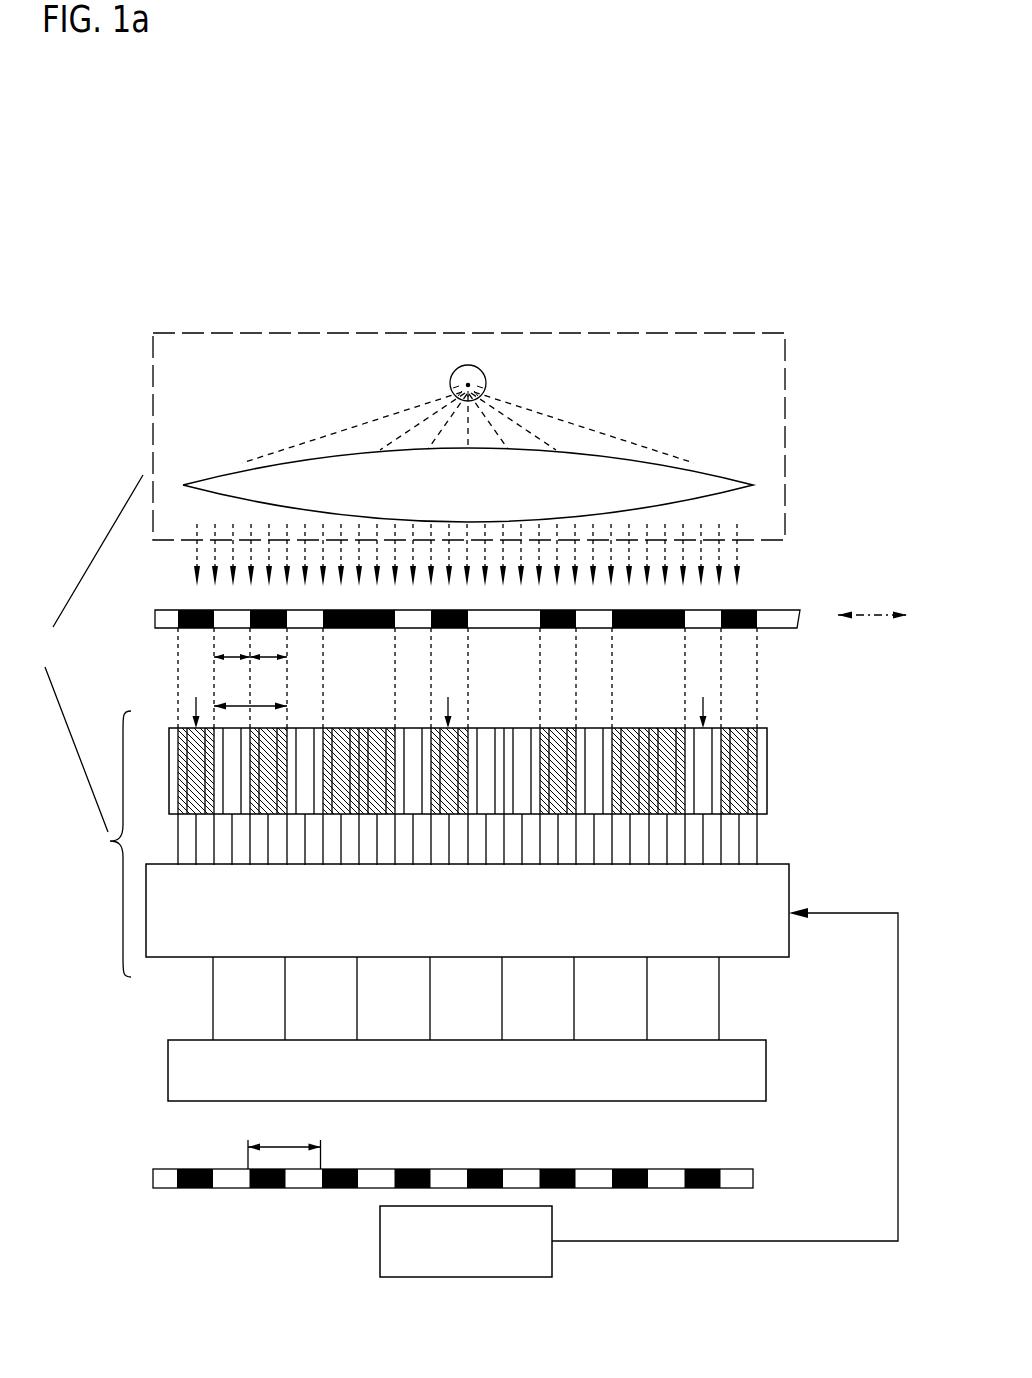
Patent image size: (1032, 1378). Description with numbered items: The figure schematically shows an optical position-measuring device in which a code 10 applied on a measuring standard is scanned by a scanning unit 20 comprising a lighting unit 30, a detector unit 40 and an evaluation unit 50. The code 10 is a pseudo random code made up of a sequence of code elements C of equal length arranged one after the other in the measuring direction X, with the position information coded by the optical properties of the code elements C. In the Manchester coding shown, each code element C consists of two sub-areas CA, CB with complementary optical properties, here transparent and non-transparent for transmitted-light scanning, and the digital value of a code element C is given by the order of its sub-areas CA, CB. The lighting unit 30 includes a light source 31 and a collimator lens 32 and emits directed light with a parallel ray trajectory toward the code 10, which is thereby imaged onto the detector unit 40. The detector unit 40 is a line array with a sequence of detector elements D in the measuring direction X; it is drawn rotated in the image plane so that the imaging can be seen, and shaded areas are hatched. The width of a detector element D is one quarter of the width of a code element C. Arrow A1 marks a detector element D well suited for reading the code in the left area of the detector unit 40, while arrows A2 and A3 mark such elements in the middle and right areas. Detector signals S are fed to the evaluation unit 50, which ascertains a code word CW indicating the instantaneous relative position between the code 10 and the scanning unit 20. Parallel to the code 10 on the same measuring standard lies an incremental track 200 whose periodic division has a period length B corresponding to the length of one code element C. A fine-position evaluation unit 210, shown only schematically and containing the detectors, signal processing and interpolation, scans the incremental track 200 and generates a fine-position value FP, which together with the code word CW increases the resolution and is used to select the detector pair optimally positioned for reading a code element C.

The code 10 is at (171, 619).
The scanning unit 20 is at (90, 726).
The lighting unit 30 is at (785, 385).
The light source 31 is at (473, 377).
The collimator lens 32 is at (740, 483).
The detector unit 40 is at (767, 762).
The evaluation unit 50 is at (786, 928).
The incremental track 200 is at (167, 1180).
The fine-position evaluation unit 210 is at (463, 1258).
The measuring direction X is at (872, 601).
The detector element D is at (721, 815).
The detector signals S is at (721, 862).
The code word CW is at (766, 1070).
The fine-position value FP is at (775, 1241).
The arrow A1 is at (194, 699).
The arrow A2 is at (449, 699).
The arrow A3 is at (702, 699).
The sub-area CA is at (232, 647).
The sub-area CB is at (268, 647).
The code element C is at (250, 695).
The period length B is at (284, 1144).